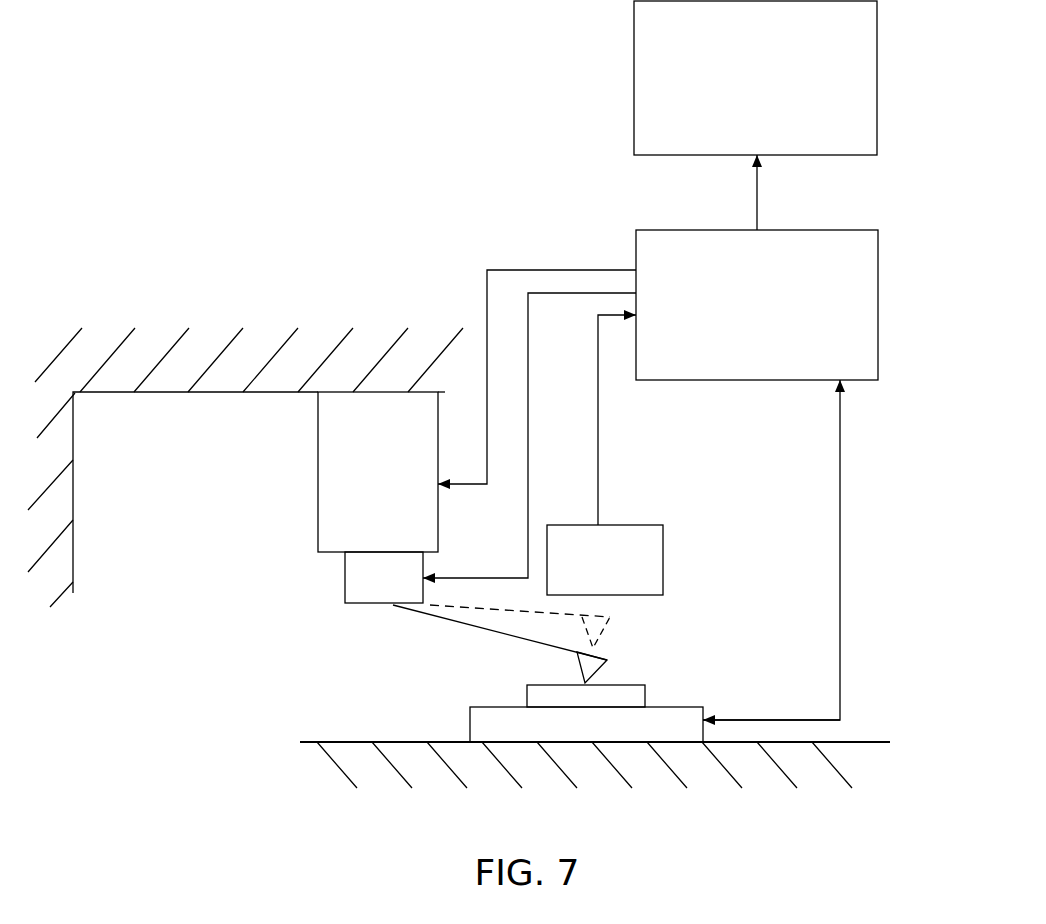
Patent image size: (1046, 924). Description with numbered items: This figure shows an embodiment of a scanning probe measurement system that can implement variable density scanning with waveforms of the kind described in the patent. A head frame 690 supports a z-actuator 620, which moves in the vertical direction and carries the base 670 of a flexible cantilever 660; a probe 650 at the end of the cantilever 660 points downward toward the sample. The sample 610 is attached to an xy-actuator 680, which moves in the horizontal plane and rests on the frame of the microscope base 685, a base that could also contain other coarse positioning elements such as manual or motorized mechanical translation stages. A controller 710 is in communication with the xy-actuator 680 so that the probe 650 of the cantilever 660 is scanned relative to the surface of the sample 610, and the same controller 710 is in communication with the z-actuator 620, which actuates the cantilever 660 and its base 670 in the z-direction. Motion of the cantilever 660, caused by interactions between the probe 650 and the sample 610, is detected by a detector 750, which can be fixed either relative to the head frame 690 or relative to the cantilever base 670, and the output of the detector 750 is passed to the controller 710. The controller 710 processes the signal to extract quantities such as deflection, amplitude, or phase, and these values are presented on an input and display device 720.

The sample 610 is at (646, 694).
The z-actuator 620 is at (318, 518).
The probe 650 is at (608, 660).
The cantilever 660 is at (487, 629).
The base of the cantilever 670 is at (360, 592).
The xy-actuator 680 is at (470, 721).
The microscope base 685 is at (327, 742).
The head frame 690 is at (170, 393).
The controller 710 is at (731, 368).
The display device 720 is at (731, 143).
The detector 750 is at (579, 590).